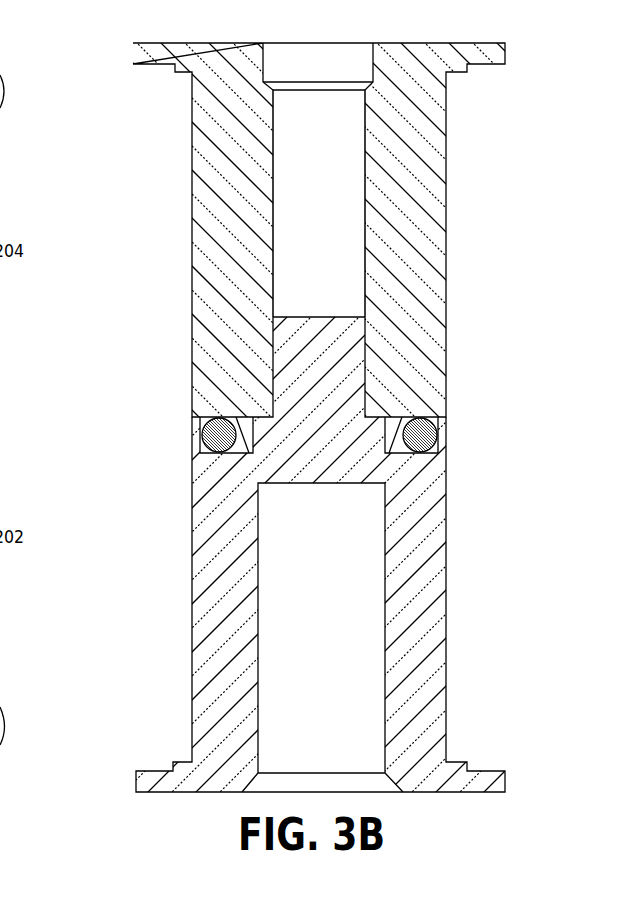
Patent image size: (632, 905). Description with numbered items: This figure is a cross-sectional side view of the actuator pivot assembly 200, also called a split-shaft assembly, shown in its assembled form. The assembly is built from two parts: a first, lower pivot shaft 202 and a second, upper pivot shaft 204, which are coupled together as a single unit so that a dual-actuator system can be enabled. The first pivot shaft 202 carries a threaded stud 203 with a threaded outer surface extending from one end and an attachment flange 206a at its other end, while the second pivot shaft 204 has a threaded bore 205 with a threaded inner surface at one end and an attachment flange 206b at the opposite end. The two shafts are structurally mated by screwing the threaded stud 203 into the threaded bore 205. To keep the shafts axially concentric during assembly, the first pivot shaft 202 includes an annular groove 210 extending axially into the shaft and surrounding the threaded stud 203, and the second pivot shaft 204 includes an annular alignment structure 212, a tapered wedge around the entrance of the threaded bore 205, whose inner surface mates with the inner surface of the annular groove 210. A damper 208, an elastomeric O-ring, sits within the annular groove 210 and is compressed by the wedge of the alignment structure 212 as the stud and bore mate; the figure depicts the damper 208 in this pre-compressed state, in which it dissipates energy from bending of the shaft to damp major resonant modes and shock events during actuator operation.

The actuator pivot assembly 200 is at (123, 32).
The first pivot shaft 202 is at (430, 588).
The threaded stud 203 is at (323, 316).
The second pivot shaft 204 is at (423, 242).
The threaded bore 205 is at (276, 243).
The attachment flange 206a is at (498, 780).
The attachment flange 206b is at (497, 52).
The damper 208 is at (432, 431).
The annular groove 210 is at (421, 455).
The alignment structure 212 is at (400, 416).